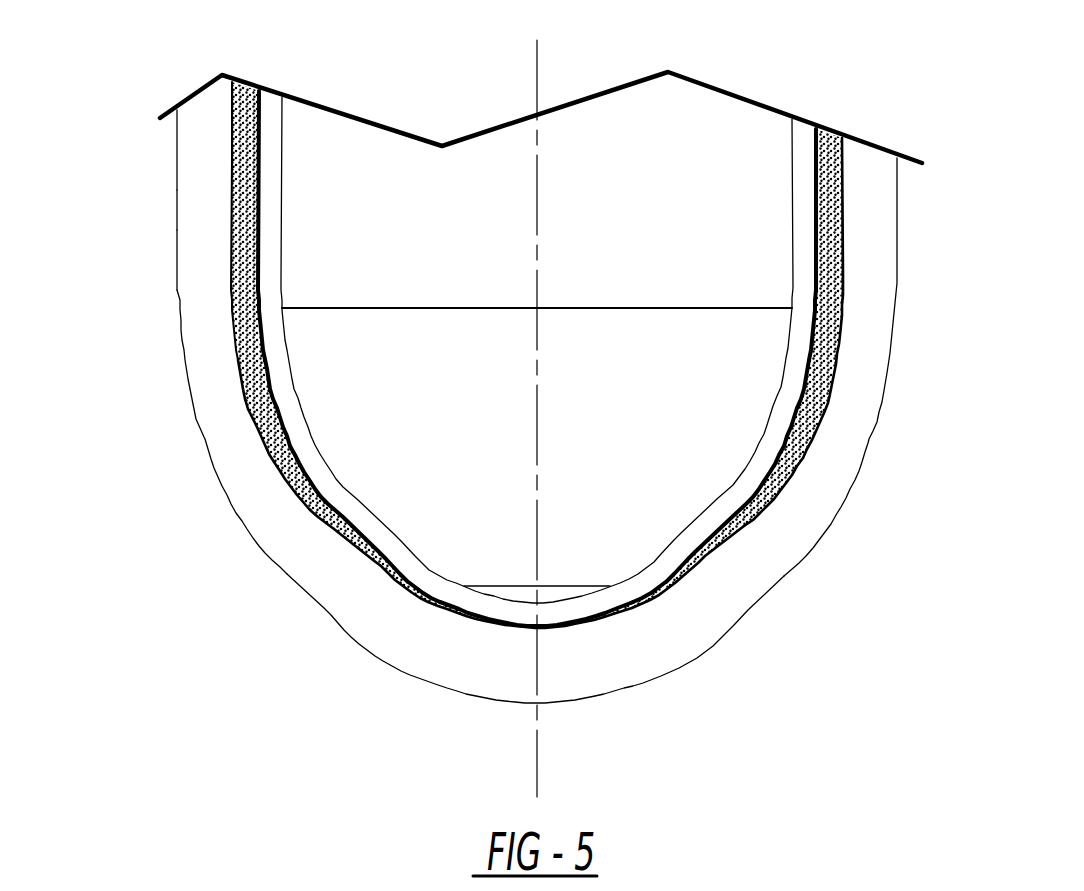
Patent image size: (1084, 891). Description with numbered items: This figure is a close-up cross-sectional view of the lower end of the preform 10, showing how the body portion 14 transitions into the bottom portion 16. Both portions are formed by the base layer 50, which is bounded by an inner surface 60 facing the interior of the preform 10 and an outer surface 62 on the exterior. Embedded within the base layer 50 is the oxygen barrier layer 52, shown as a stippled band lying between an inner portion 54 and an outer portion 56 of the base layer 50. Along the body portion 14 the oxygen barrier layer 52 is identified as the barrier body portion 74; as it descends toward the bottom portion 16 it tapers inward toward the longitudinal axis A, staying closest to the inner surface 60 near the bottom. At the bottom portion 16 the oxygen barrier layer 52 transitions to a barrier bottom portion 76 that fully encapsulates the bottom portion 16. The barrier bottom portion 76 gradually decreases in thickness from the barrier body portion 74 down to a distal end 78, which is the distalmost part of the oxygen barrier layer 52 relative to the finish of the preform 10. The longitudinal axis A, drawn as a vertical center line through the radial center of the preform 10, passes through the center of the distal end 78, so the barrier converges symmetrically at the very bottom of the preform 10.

The preform 10 is at (112, 391).
The body portion 14 is at (177, 130).
The bottom portion 16 is at (392, 653).
The base layer 50 is at (177, 247).
The oxygen barrier layer 52 is at (252, 412).
The inner portion 54 is at (276, 133).
The outer portion 56 is at (225, 210).
The inner surface 60 is at (282, 223).
The outer surface 62 is at (177, 202).
The barrier body portion 74 is at (232, 118).
The barrier bottom portion 76 is at (367, 578).
The distal end 78 is at (541, 630).
The longitudinal axis A is at (537, 63).